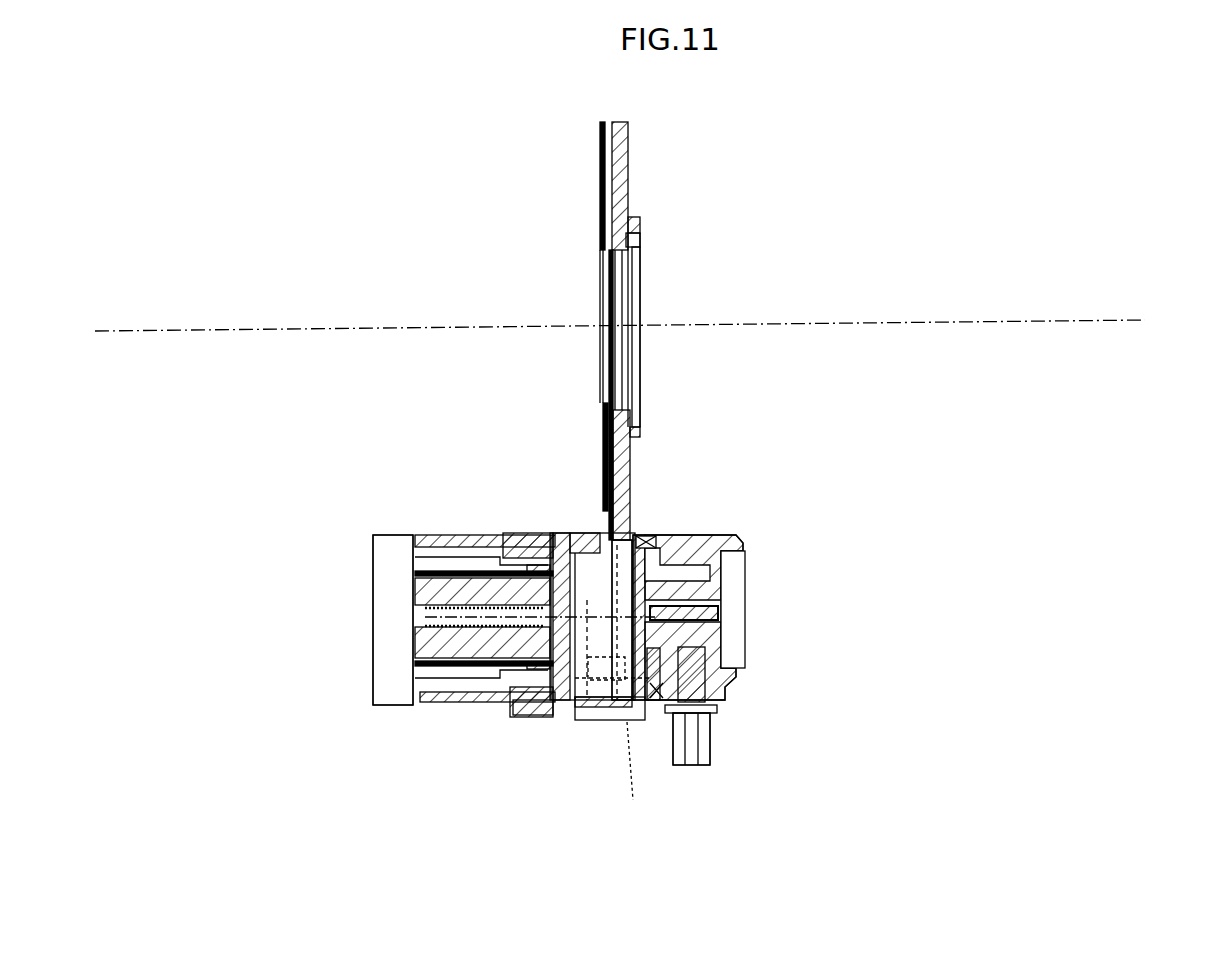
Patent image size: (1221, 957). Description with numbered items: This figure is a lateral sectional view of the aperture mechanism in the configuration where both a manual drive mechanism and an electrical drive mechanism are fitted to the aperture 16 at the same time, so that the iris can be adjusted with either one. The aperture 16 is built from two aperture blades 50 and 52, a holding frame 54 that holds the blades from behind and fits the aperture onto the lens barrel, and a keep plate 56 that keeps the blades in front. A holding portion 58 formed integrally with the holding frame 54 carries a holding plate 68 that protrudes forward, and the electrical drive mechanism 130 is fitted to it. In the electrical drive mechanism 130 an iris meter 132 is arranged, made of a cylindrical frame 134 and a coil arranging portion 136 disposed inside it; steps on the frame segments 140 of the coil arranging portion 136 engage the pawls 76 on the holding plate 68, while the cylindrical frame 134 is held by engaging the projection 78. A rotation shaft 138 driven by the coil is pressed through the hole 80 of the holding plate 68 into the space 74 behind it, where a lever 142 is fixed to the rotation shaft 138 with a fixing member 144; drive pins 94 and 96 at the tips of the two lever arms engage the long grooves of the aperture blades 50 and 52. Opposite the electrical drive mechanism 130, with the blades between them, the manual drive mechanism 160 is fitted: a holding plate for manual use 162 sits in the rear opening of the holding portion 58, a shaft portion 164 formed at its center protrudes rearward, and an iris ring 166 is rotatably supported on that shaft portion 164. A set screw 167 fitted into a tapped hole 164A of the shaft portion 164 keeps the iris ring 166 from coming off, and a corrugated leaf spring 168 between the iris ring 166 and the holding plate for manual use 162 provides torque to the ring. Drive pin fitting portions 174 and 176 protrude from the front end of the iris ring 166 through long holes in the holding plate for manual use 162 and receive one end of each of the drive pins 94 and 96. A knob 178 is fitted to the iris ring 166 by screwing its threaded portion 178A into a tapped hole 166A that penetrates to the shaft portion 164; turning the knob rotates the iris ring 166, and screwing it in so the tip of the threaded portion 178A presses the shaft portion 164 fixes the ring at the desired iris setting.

The aperture 16 is at (397, 230).
The aperture blade 50 is at (640, 225).
The aperture blade 52 is at (605, 372).
The holding frame 54 is at (628, 178).
The keep plate 56 is at (600, 212).
The holding portion 58 is at (1033, 612).
The holding plate 68 is at (548, 715).
The space 74 is at (640, 723).
The pawl 76 is at (500, 540).
The projection 78 is at (520, 715).
The hole 80 is at (555, 540).
The drive pin 94 is at (631, 780).
The drive pin 96 is at (610, 535).
The electrical drive mechanism 130 is at (263, 630).
The iris meter 132 is at (430, 710).
The cylindrical frame 134 is at (415, 537).
The coil arranging portion 136 is at (430, 617).
The rotation shaft 138 is at (546, 540).
The frame segment 140 is at (413, 578).
The lever 142 is at (557, 533).
The fixing member 144 is at (580, 710).
The manual drive mechanism 160 is at (930, 503).
The holding plate for manual use 162 is at (636, 540).
The shaft portion 164 is at (735, 593).
The tapped hole 164A is at (738, 613).
The iris ring 166 is at (727, 540).
The tapped hole 166A is at (715, 710).
The set screw 167 is at (755, 562).
The corrugated leaf spring 168 is at (658, 553).
The drive pin fitting portion 174 is at (660, 672).
The drive pin fitting portion 176 is at (748, 548).
The knob 178 is at (690, 770).
The threaded portion 178A is at (705, 748).